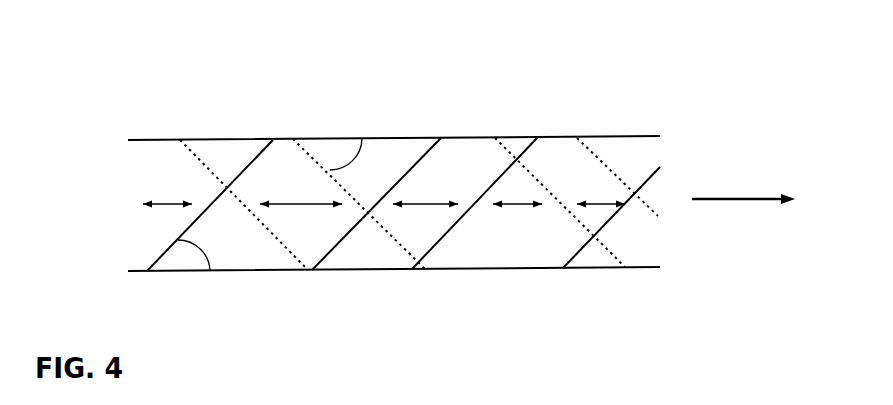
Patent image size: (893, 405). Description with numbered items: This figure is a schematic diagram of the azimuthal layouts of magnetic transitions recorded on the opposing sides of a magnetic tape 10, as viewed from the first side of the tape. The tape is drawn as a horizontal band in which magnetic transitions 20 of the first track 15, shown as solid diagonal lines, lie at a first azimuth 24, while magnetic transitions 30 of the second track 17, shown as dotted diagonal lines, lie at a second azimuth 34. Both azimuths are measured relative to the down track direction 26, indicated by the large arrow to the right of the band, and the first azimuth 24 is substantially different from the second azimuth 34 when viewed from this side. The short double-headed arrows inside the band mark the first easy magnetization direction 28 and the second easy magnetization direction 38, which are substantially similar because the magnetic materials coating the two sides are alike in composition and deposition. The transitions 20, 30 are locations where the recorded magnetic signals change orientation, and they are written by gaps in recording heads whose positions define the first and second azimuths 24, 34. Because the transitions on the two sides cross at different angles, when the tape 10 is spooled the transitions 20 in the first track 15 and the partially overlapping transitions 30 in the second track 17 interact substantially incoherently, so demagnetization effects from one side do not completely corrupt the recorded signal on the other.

The magnetic tape 10 is at (143, 107).
The first track 15 is at (340, 212).
The second track 17 is at (125, 223).
The magnetic transitions 20 is at (340, 248).
The first azimuth 24 is at (213, 255).
The down track direction 26 is at (758, 180).
The first easy magnetization direction 28 is at (400, 260).
The magnetic transitions 30 is at (198, 155).
The second azimuth 34 is at (363, 155).
The second easy magnetization direction 38 is at (518, 212).